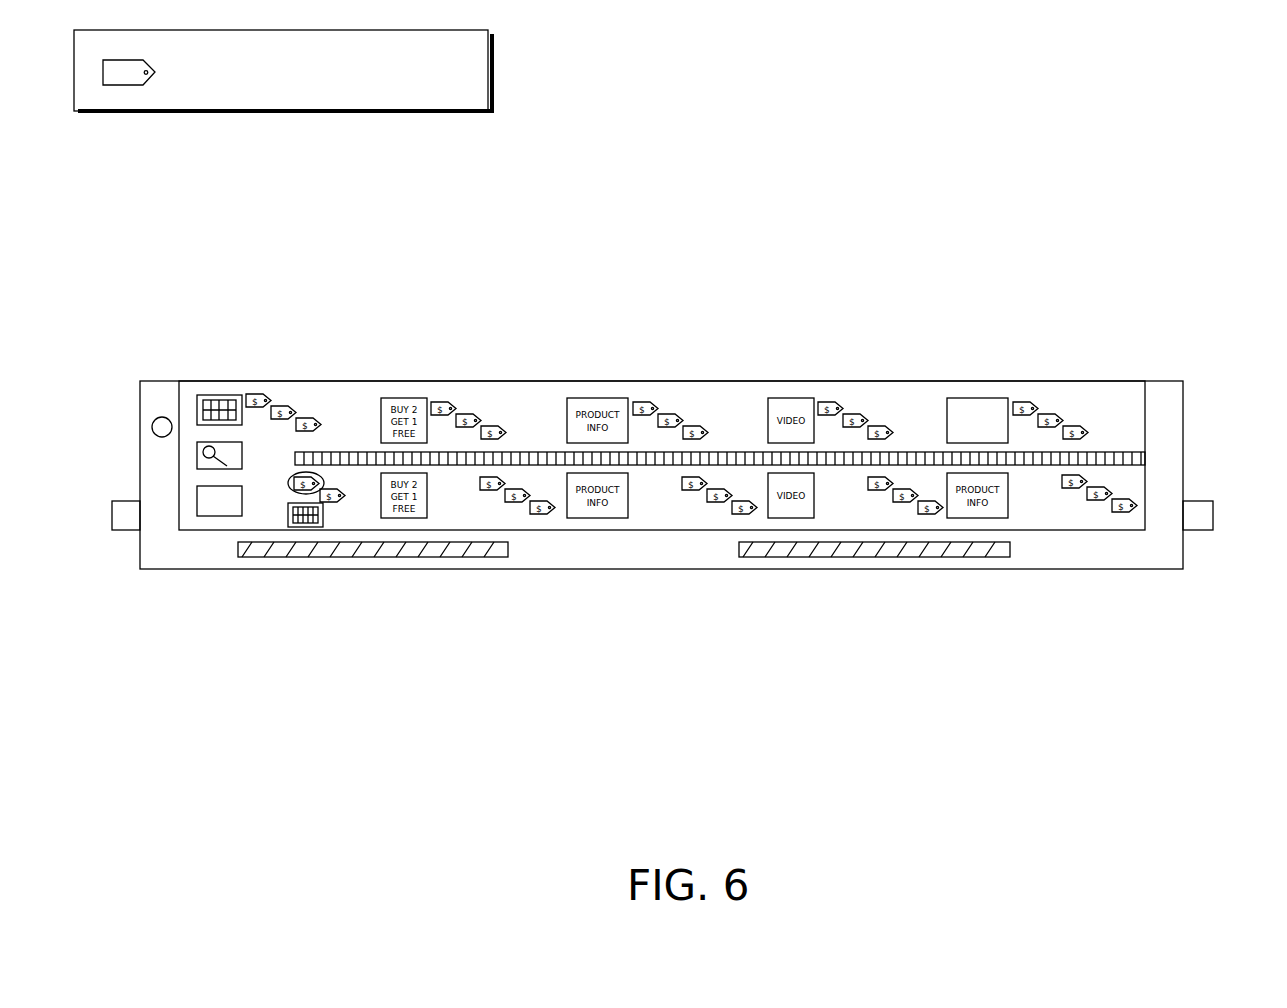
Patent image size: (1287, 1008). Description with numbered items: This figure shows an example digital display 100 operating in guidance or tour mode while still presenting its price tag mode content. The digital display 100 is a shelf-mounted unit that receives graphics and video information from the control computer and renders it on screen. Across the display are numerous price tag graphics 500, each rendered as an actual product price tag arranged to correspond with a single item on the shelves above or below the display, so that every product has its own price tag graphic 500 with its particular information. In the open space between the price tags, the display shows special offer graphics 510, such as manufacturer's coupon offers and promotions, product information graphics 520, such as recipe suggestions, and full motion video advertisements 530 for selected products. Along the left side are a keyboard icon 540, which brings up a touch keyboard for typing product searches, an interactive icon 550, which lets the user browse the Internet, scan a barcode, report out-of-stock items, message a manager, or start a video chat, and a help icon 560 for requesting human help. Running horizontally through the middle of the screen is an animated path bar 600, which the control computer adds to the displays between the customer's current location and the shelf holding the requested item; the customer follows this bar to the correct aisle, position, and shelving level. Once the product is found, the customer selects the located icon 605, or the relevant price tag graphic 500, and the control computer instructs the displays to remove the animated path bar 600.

The digital display 100 is at (1197, 82).
The price tag graphic 500 is at (283, 70).
The special offer graphic 510 is at (406, 387).
The product information graphic 520 is at (608, 387).
The full motion video advertisement 530 is at (793, 387).
The keyboard icon 540 is at (219, 387).
The interactive icon 550 is at (253, 458).
The help icon 560 is at (222, 526).
The animated path bar 600 is at (524, 442).
The located icon 605 is at (312, 537).